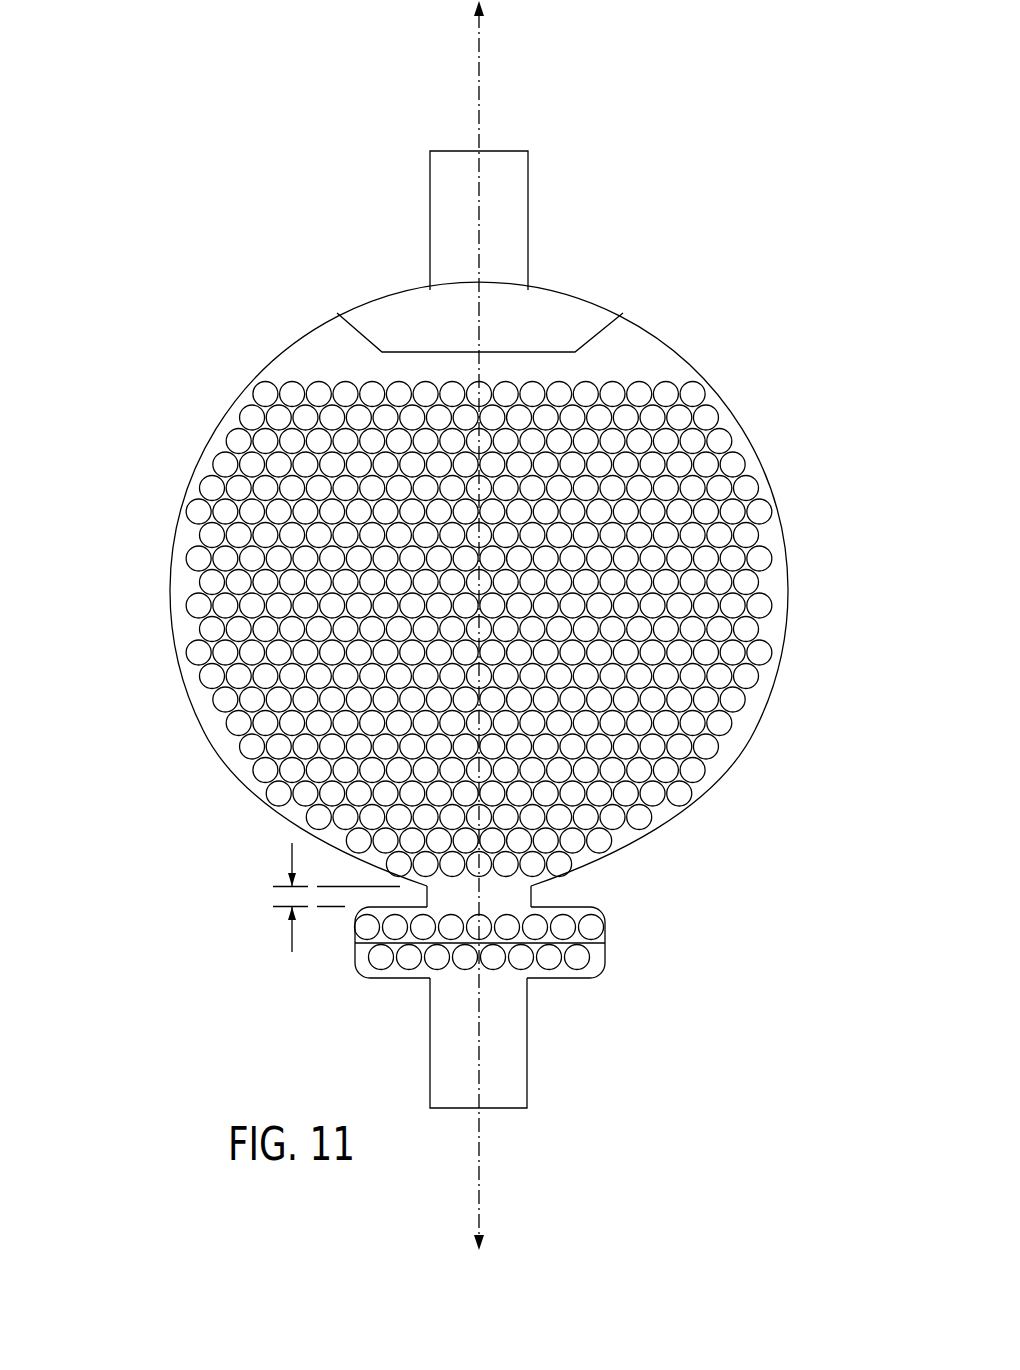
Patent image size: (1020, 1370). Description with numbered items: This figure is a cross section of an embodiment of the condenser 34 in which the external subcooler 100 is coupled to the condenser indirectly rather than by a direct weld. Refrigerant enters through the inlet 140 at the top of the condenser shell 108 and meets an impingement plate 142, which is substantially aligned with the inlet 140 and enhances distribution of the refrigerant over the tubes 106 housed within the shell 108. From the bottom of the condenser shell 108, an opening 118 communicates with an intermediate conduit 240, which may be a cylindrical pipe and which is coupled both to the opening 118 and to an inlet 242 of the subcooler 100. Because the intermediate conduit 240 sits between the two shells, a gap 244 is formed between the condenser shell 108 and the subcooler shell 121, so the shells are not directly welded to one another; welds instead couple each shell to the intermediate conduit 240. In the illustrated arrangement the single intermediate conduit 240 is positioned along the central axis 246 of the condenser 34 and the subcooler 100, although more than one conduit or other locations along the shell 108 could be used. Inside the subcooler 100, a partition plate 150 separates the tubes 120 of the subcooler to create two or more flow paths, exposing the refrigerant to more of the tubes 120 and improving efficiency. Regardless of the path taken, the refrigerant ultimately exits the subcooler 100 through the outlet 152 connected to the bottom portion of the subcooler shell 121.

The condenser 34 is at (138, 610).
The external subcooler 100 is at (612, 944).
The tubes 106 is at (633, 392).
The condenser shell 108 is at (185, 690).
The opening 118 is at (458, 898).
The tubes of the subcooler 120 is at (407, 968).
The subcooler shell 121 is at (417, 978).
The inlet 140 is at (510, 150).
The impingement plate 142 is at (548, 352).
The partition plate 150 is at (510, 960).
The outlet 152 is at (502, 1108).
The intermediate conduit 240 is at (533, 895).
The inlet of the subcooler 242 is at (445, 898).
The gap 244 is at (292, 930).
The central axis 246 is at (478, 78).